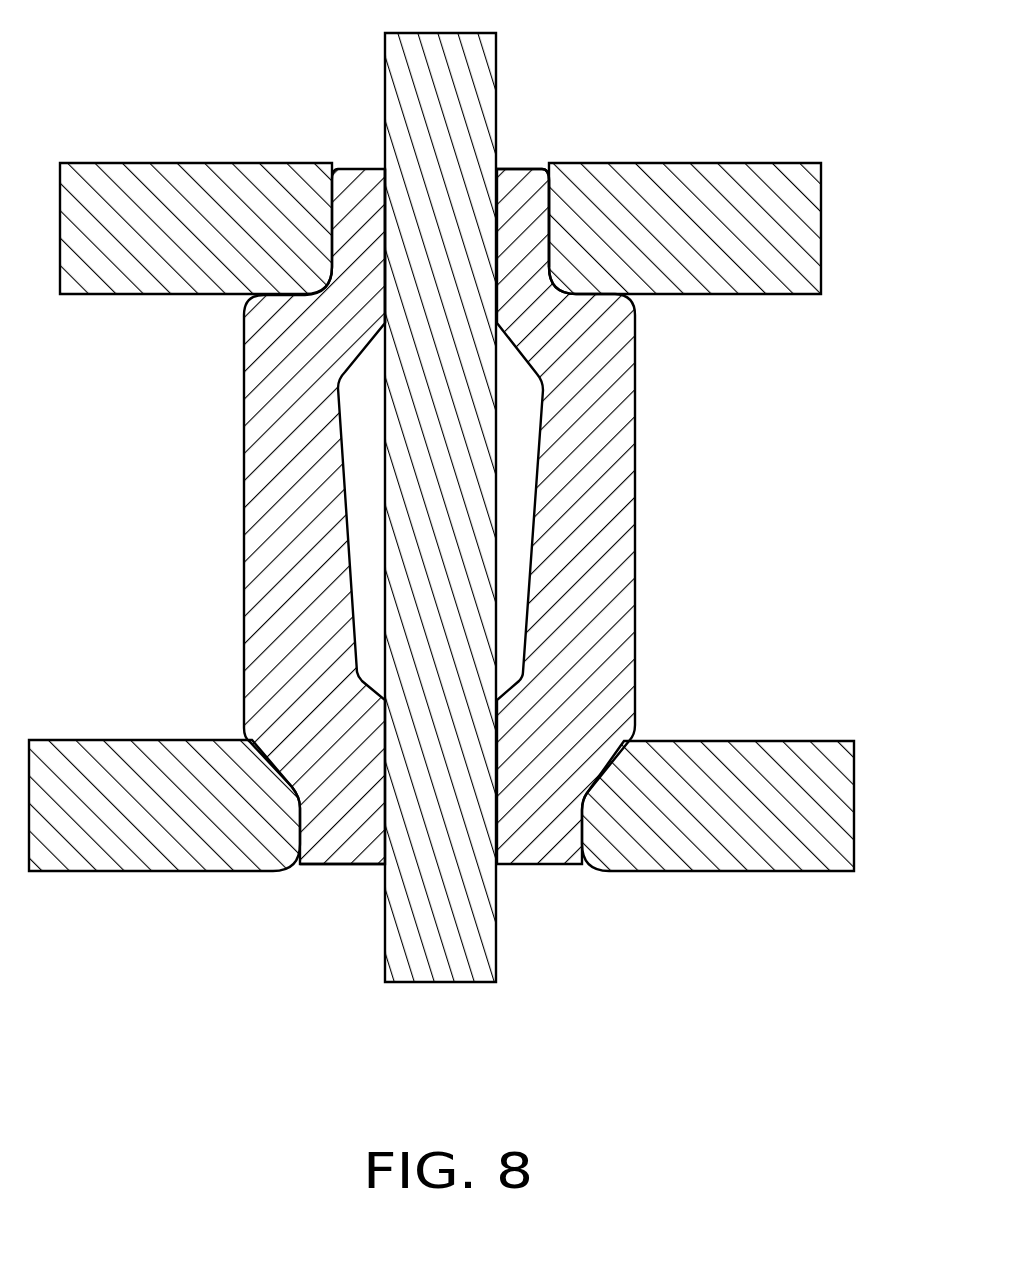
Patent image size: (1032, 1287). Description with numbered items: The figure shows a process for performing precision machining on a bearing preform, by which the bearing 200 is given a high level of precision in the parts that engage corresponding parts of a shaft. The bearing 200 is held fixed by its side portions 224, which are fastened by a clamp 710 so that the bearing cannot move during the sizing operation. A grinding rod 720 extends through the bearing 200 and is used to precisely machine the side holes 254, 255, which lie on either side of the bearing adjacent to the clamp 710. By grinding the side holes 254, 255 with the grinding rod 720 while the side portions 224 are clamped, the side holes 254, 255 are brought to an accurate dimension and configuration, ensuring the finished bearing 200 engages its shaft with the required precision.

The bearing 200 is at (275, 473).
The side portions 224 is at (520, 200).
The side hole 254 is at (383, 223).
The side hole 255 is at (342, 865).
The clamp 710 is at (788, 225).
The grinding rod 720 is at (448, 912).